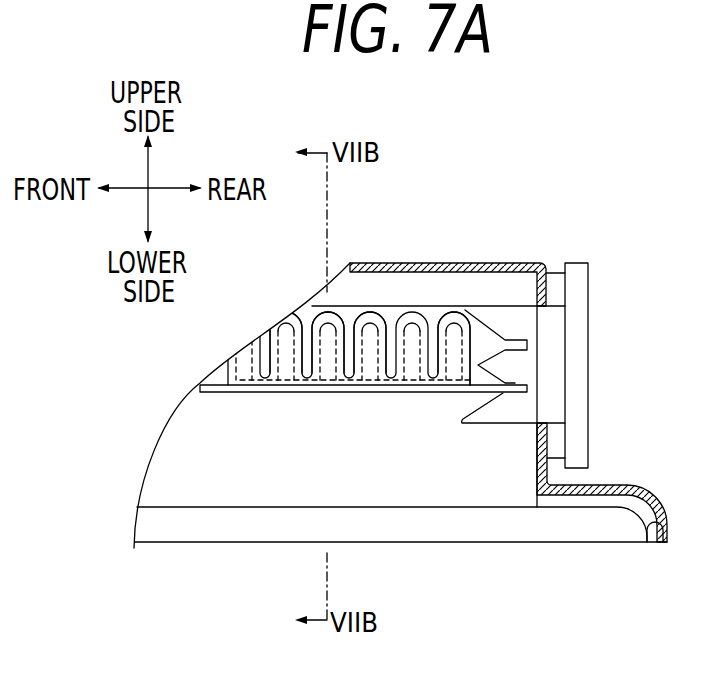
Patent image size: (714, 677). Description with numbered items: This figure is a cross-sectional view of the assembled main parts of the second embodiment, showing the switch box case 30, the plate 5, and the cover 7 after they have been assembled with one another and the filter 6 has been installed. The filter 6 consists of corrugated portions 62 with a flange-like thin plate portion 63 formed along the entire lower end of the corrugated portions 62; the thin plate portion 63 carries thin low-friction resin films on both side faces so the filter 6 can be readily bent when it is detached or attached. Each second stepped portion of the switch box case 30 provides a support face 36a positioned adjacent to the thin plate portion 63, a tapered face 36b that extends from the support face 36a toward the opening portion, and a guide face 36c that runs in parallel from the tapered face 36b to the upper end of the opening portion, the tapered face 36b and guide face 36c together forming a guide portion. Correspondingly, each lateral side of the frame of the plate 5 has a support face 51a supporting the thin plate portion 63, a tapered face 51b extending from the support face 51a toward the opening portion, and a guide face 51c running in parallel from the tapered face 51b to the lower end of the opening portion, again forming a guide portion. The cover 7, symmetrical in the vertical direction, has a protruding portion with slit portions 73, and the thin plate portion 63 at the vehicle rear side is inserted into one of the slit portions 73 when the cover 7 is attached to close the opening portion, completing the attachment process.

The plate 5 is at (362, 480).
The filter 6 is at (379, 281).
The cover 7 is at (590, 322).
The switch box case 30 is at (526, 257).
The support face 36a is at (283, 378).
The tapered face 36b is at (347, 373).
The guide face 36c is at (447, 307).
The support face 51a is at (367, 390).
The tapered face 51b is at (403, 390).
The guide face 51c is at (500, 423).
The corrugated portions 62 is at (386, 328).
The thin plate portion 63 is at (493, 395).
The slit portions 73 is at (527, 385).